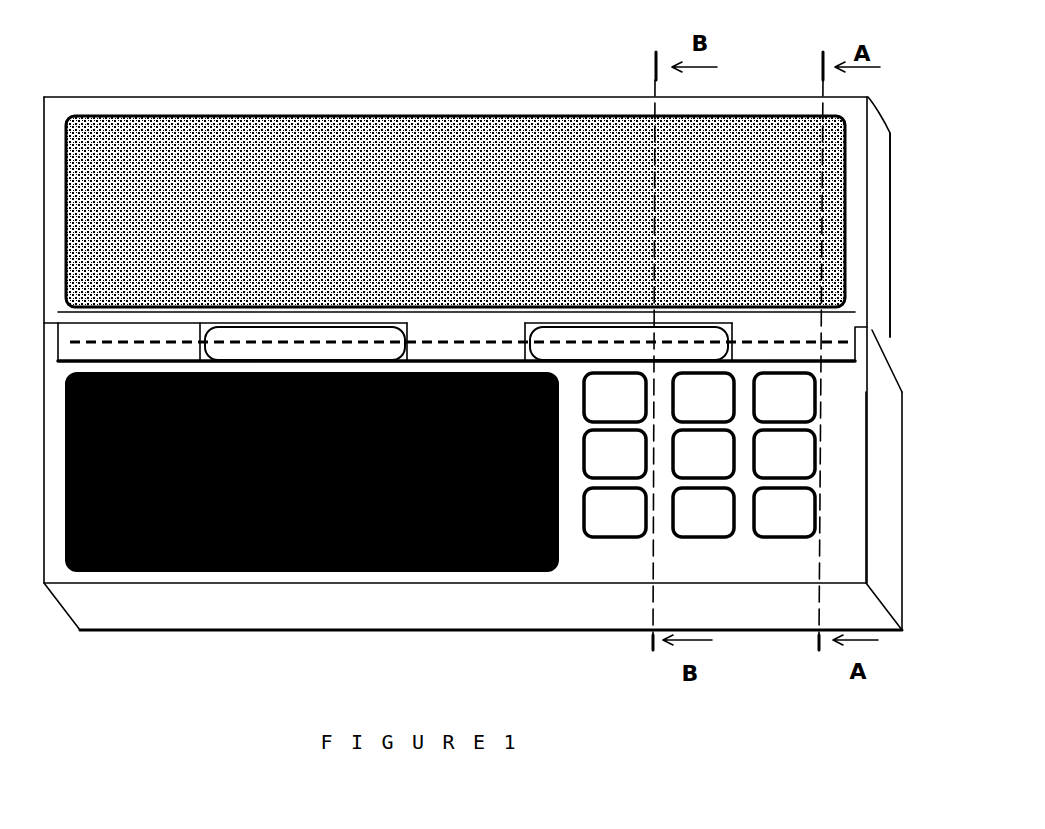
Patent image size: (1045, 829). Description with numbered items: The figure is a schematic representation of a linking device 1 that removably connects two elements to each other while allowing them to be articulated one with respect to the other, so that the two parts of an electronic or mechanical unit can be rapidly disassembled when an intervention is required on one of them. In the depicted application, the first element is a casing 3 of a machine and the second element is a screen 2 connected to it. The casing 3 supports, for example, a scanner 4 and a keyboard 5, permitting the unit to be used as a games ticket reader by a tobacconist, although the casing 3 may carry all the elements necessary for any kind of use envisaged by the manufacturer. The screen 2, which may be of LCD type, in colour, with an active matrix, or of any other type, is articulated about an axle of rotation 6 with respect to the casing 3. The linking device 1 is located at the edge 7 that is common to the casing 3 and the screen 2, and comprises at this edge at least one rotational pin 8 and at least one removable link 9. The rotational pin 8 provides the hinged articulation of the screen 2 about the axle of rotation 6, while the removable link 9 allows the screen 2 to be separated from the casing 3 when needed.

The linking device 1 is at (120, 58).
The screen 2 is at (540, 106).
The casing 3 is at (578, 565).
The scanner 4 is at (383, 575).
The keyboard 5 is at (716, 521).
The axle of rotation 6 is at (151, 341).
The edge 7 is at (886, 352).
The rotational pin 8 is at (840, 332).
The removable link 9 is at (718, 332).